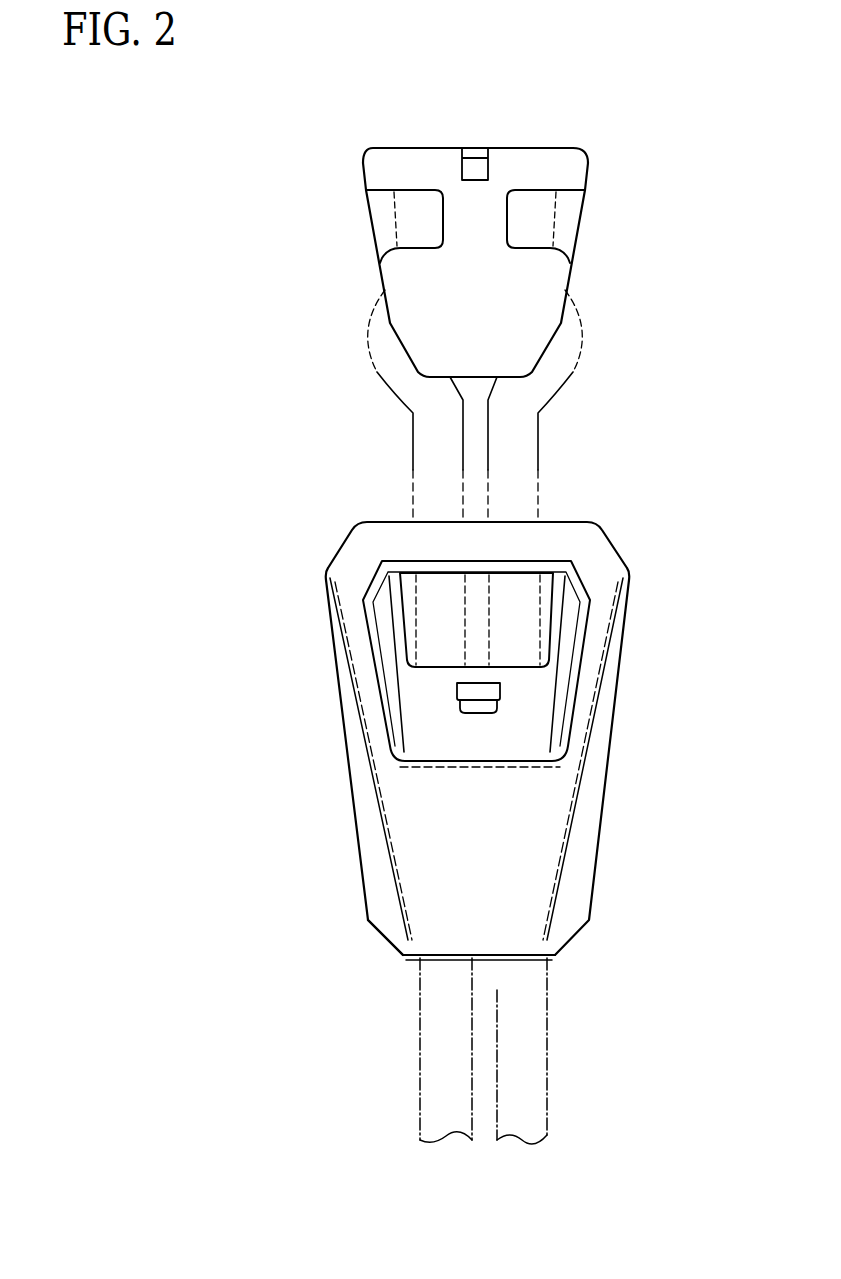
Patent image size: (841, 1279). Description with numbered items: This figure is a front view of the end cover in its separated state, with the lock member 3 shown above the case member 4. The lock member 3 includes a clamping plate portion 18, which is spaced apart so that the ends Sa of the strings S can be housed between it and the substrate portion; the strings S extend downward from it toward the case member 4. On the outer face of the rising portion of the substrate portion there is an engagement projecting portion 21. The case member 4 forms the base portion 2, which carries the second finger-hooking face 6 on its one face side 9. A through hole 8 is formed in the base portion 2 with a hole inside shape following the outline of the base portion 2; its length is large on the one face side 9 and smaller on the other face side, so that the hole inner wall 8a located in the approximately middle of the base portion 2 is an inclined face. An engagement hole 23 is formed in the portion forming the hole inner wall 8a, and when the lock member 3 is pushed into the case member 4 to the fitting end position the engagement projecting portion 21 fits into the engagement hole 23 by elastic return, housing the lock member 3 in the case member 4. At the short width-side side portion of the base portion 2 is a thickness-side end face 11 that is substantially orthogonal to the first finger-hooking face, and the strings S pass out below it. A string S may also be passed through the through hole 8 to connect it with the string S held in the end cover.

The base portion 2 is at (542, 893).
The lock member 3 is at (567, 160).
The case member 4 is at (396, 893).
The second finger-hooking face 6 is at (542, 830).
The through hole 8 is at (553, 596).
The hole inner wall 8a is at (527, 722).
The one face side 9 is at (412, 817).
The thickness-side end face 11 is at (551, 958).
The clamping plate portion 18 is at (493, 302).
The engagement projecting portion 21 is at (473, 148).
The engagement hole 23 is at (458, 699).
The string S is at (432, 1075).
The ends Sa is at (405, 237).